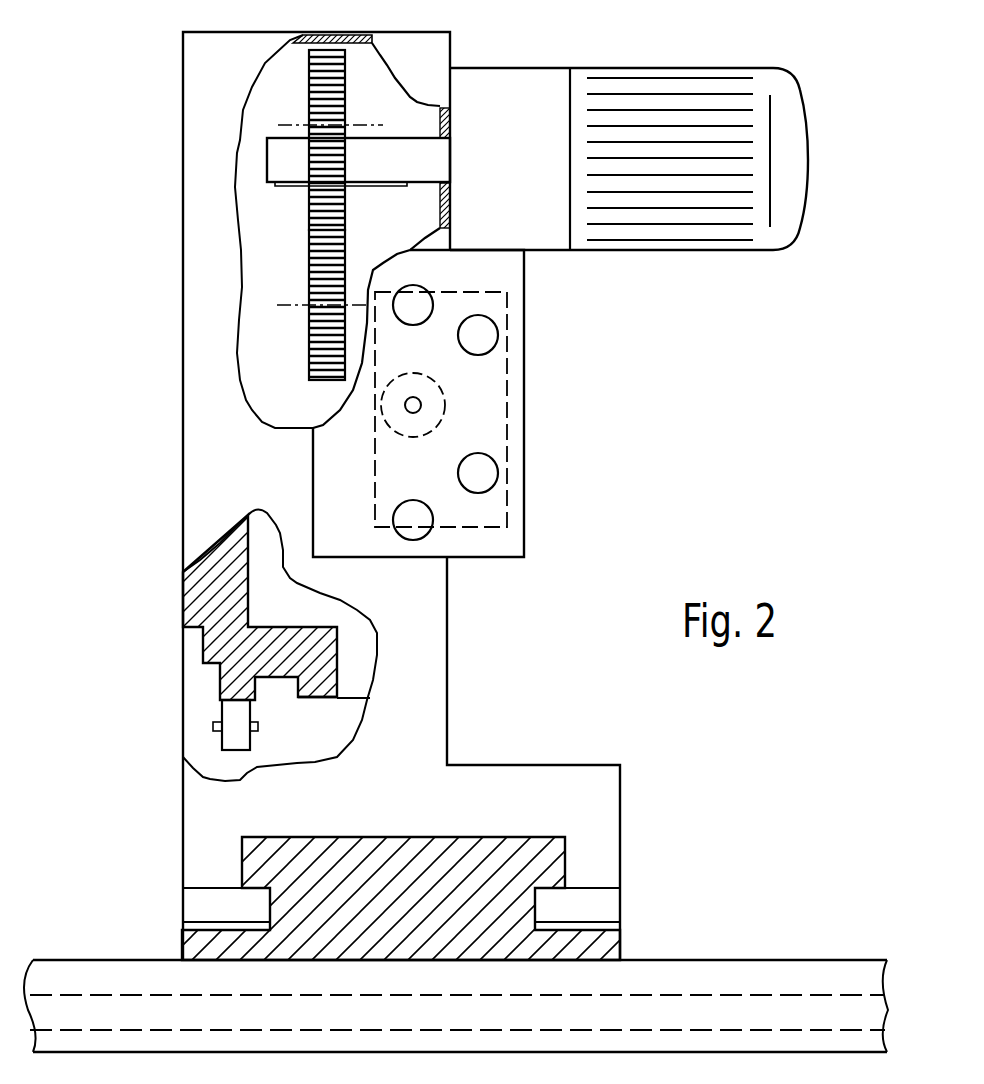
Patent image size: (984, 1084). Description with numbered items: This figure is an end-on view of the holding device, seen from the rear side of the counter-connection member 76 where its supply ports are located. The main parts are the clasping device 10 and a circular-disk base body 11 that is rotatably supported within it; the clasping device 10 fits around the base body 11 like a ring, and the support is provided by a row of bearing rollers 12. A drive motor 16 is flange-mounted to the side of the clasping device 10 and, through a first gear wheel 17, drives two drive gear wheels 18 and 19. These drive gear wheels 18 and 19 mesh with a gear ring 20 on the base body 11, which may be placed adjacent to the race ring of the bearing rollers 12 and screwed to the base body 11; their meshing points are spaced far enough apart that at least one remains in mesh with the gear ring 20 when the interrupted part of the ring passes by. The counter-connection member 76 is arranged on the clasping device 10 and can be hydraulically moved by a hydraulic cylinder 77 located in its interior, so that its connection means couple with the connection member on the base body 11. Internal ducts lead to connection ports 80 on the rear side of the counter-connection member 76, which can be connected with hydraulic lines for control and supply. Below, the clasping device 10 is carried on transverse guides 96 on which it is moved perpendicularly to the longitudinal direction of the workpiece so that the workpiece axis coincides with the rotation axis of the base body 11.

The clasping device 10 is at (197, 443).
The base body 11 is at (215, 565).
The bearing rollers 12 is at (235, 742).
The drive motor 16 is at (698, 238).
The first gear wheel 17 is at (328, 202).
The drive gear wheel 18 is at (307, 68).
The drive gear wheel 19 is at (318, 333).
The gear ring 20 is at (323, 698).
The counter-connection member 76 is at (527, 387).
The hydraulic cylinder 77 is at (397, 432).
The connection ports 80 is at (427, 305).
The transverse guides 96 is at (193, 940).